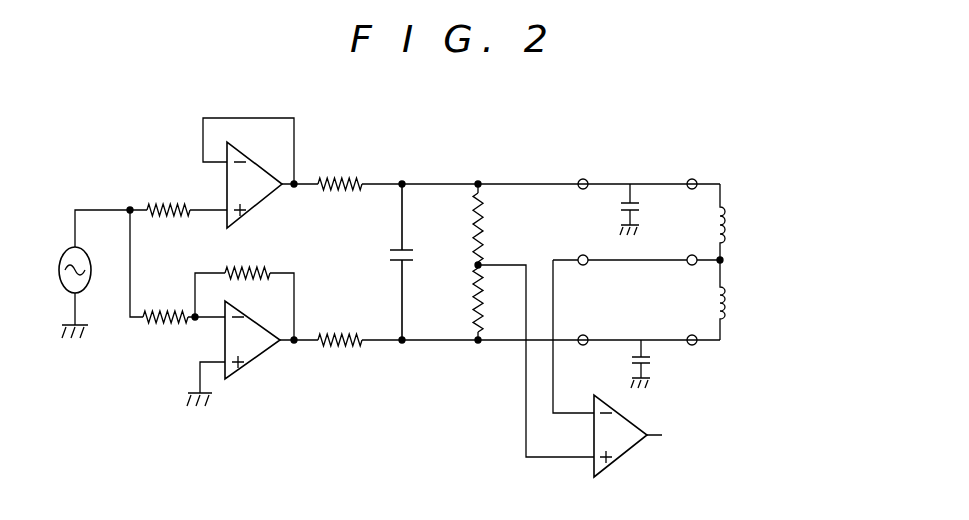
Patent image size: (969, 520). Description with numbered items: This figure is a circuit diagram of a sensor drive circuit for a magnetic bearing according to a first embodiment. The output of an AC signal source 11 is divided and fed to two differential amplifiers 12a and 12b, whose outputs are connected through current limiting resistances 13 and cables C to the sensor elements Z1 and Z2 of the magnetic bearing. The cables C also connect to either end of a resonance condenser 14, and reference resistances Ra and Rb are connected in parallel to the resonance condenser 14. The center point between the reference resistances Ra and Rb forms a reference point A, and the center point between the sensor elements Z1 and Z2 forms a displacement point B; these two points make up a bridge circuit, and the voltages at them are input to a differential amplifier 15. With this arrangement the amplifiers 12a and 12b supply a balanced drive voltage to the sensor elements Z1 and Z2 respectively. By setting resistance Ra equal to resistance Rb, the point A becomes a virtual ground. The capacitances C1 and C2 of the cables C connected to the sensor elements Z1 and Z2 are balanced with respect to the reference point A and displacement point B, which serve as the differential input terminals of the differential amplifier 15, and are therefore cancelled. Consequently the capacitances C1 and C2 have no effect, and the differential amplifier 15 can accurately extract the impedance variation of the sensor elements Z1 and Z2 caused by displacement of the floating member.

The AC signal source 11 is at (59, 270).
The differential amplifier 12a is at (250, 212).
The differential amplifier 12b is at (247, 363).
The current limiting resistance 13 is at (337, 178).
The resonance condenser 14 is at (393, 263).
The differential amplifier 15 is at (615, 460).
The reference resistance Ra is at (455, 223).
The reference resistance Rb is at (455, 301).
The reference point A is at (483, 257).
The displacement point B is at (723, 260).
The cable C is at (602, 192).
The capacitance C1 is at (647, 209).
The capacitance C2 is at (658, 364).
The sensor element Z1 is at (742, 222).
The sensor element Z2 is at (742, 300).